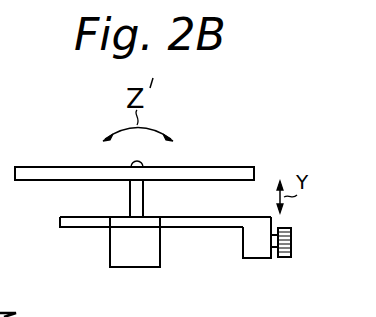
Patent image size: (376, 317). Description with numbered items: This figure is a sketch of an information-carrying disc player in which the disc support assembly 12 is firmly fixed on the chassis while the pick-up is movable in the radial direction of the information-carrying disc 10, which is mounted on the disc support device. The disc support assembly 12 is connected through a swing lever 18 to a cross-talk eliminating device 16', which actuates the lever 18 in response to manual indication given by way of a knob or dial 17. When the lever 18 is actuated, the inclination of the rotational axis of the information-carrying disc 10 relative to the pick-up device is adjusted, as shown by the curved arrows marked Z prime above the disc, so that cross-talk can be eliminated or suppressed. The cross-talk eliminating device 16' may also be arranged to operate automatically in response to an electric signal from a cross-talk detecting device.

The information-carrying disc 10 is at (217, 165).
The disc support assembly 12 is at (137, 268).
The cross-talk eliminating device 16' is at (253, 266).
The knob or dial 17 is at (285, 258).
The swing lever 18 is at (205, 228).